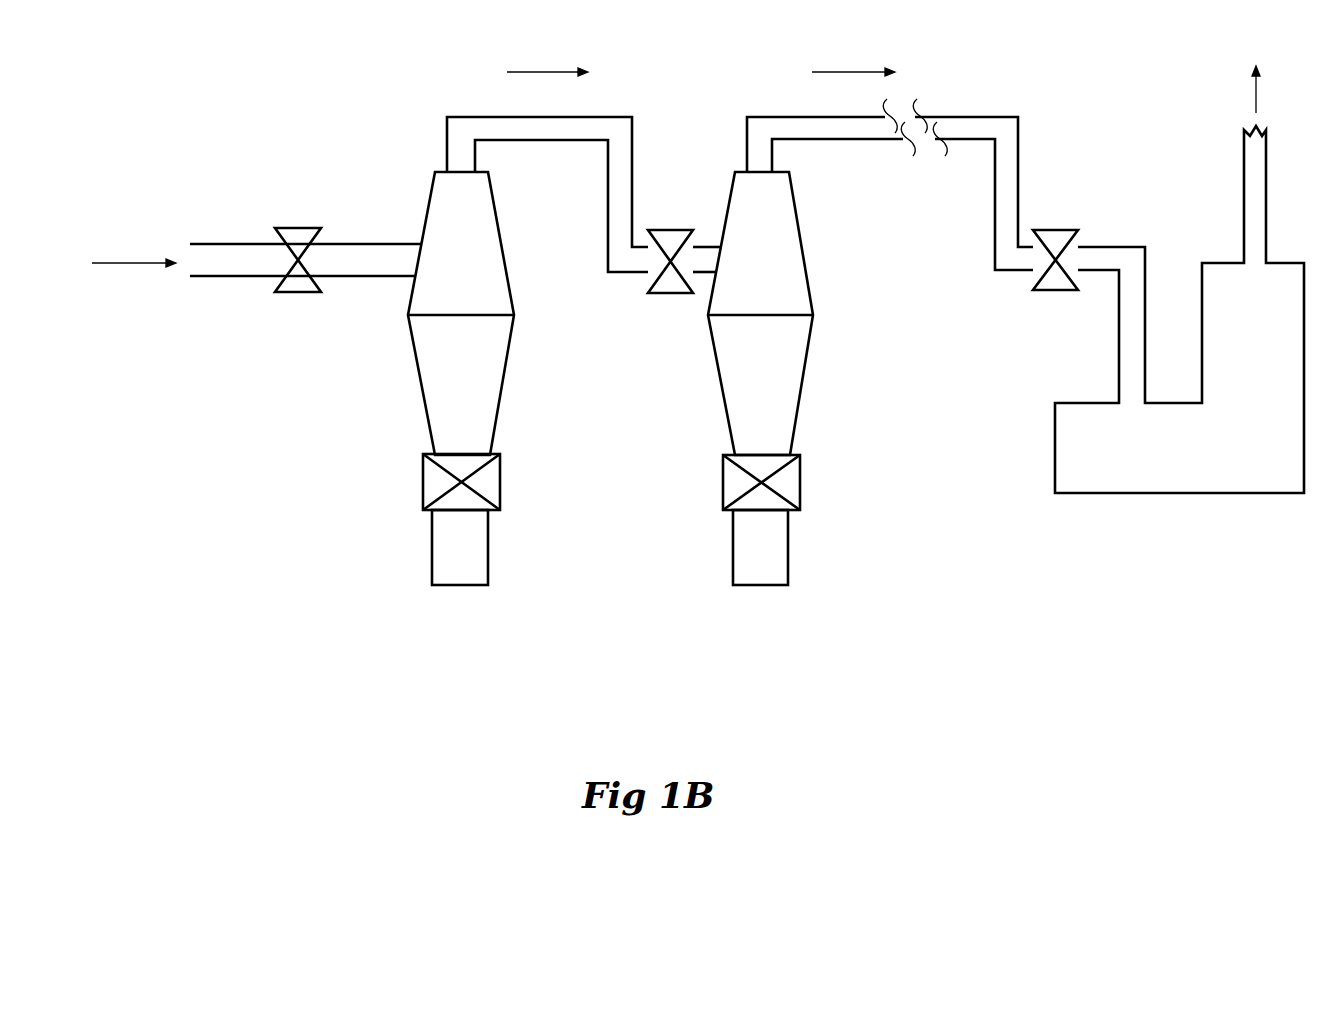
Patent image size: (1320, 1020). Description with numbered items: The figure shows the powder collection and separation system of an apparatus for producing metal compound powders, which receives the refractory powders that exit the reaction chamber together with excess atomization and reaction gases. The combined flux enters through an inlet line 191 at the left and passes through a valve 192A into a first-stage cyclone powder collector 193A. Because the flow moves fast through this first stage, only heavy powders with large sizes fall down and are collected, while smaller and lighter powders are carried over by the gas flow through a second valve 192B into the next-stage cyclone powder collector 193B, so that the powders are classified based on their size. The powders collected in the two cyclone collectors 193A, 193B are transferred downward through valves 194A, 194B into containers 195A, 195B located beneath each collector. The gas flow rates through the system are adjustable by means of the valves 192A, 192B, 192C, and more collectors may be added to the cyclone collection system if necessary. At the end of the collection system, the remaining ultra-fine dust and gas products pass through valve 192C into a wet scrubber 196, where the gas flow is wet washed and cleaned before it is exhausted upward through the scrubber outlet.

The inlet line 191 is at (207, 243).
The valve 192A is at (297, 230).
The valve 192B is at (671, 240).
The valve 192C is at (1058, 250).
The cyclone powder collector 193A is at (423, 362).
The cyclone powder collector 193B is at (740, 362).
The valve 194A is at (447, 483).
The valve 194B is at (735, 482).
The container 195A is at (455, 558).
The container 195B is at (748, 543).
The wet scrubber 196 is at (1090, 460).